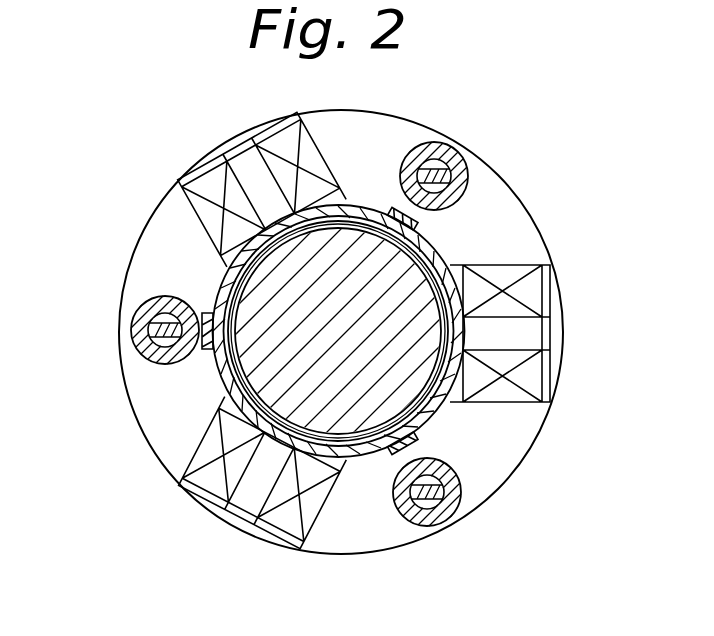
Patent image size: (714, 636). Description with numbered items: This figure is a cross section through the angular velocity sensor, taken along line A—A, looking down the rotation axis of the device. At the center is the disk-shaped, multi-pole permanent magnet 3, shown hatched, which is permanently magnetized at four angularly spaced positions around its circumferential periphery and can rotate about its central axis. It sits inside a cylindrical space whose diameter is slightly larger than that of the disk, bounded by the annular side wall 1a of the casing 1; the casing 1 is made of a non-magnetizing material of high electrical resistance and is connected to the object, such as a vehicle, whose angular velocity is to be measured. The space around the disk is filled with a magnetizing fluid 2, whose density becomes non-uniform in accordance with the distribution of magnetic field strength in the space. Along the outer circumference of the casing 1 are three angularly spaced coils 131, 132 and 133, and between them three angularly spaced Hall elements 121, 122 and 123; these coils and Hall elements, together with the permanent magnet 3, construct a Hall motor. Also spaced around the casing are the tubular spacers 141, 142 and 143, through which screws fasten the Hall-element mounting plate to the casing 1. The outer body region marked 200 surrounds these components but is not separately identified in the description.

The casing 1 is at (440, 412).
The annular side wall 1a is at (440, 247).
The magnetizing fluid 2 is at (307, 447).
The permanent magnet 3 is at (372, 410).
The housing 200 is at (512, 243).
The Hall element 121 is at (205, 350).
The Hall element 122 is at (397, 457).
The Hall element 123 is at (398, 210).
The coil 131 is at (535, 297).
The coil 132 is at (278, 140).
The coil 133 is at (273, 527).
The tubular spacer 141 is at (140, 338).
The tubular spacer 142 is at (453, 503).
The tubular spacer 143 is at (458, 172).